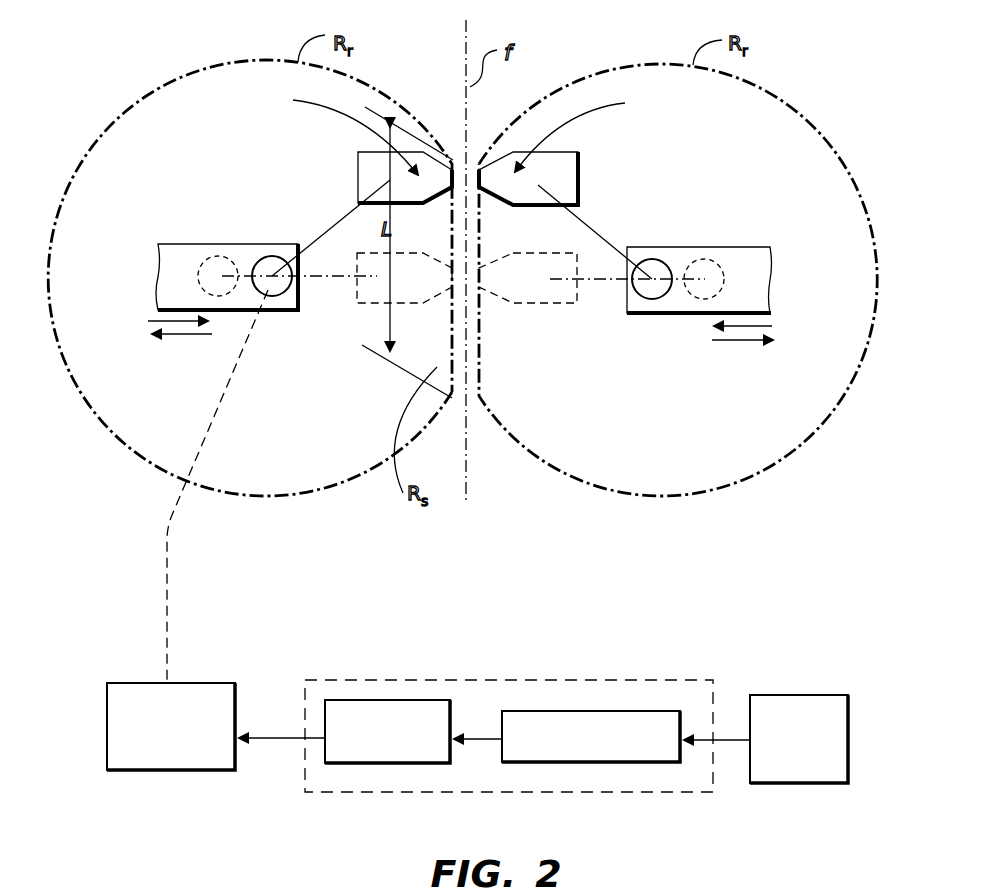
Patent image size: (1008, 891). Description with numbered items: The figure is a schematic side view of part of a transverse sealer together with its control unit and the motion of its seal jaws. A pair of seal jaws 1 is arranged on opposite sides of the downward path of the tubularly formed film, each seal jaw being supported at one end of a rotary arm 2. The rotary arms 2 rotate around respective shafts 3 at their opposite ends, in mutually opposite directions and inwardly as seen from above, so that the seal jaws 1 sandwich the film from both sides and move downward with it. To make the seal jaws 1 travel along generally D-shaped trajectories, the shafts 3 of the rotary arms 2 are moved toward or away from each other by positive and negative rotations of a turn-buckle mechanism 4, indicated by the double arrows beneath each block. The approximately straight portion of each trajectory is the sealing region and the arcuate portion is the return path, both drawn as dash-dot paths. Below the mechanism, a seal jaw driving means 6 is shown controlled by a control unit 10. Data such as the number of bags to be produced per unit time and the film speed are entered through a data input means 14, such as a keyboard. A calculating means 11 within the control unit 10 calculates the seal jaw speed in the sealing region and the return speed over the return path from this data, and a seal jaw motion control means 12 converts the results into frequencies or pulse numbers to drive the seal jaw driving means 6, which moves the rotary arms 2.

The seal jaws 1 is at (368, 178).
The rotary arms 2 is at (328, 232).
The shafts 3 is at (280, 296).
The turn-buckle mechanism 4 is at (193, 245).
The seal jaw driving means 6 is at (200, 683).
The control unit 10 is at (685, 680).
The calculating means 11 is at (577, 711).
The seal jaw motion control means 12 is at (377, 700).
The data input means 14 is at (790, 695).